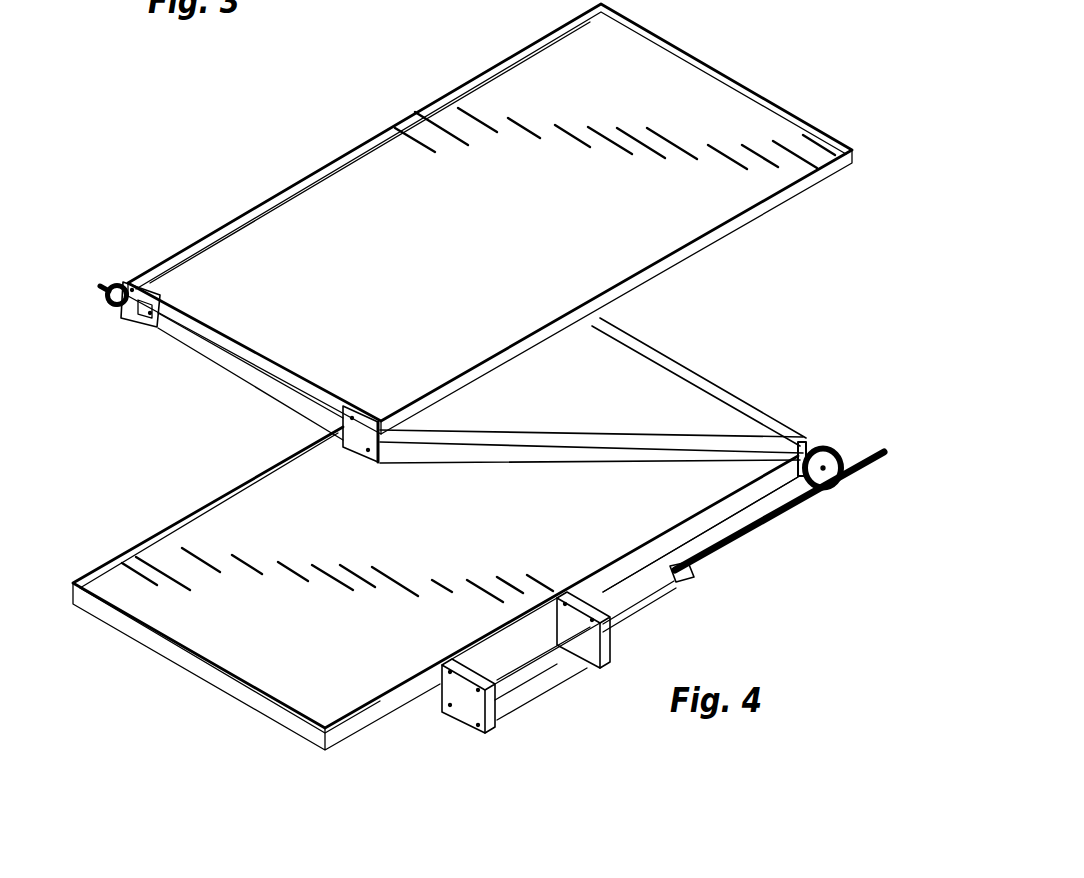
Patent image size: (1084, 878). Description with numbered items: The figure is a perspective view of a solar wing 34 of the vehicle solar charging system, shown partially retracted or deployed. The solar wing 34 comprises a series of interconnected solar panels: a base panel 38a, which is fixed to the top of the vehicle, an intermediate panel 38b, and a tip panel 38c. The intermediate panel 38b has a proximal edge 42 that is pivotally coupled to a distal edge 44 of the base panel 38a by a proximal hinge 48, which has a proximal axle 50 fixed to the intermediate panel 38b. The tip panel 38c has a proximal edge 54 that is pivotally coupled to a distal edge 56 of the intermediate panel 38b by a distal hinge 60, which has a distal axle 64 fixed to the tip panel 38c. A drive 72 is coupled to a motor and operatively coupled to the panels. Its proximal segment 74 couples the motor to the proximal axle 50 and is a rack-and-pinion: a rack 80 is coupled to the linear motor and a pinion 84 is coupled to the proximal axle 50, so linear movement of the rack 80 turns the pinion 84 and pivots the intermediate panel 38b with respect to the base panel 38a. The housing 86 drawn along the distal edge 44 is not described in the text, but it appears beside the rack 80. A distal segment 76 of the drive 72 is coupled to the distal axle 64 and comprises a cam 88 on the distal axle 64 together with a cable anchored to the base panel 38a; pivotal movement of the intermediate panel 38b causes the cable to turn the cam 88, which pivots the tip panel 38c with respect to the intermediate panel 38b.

The solar wing 34 is at (128, 670).
The base panel 38a is at (200, 540).
The intermediate panel 38b is at (632, 365).
The tip panel 38c is at (525, 90).
The proximal edge 42 is at (723, 382).
The distal edge 44 is at (752, 492).
The proximal hinge 48 is at (804, 445).
The proximal axle 50 is at (862, 477).
The proximal edge 54 is at (205, 228).
The distal edge 56 is at (230, 376).
The distal hinge 60 is at (140, 332).
The distal axle 64 is at (100, 288).
The drive 72 is at (658, 590).
The proximal segment 74 is at (718, 568).
The distal segment 76 is at (112, 306).
The rack 80 is at (819, 497).
The pinion 84 is at (835, 449).
The actuator cylinder 86 is at (533, 673).
The cam 88 is at (118, 284).